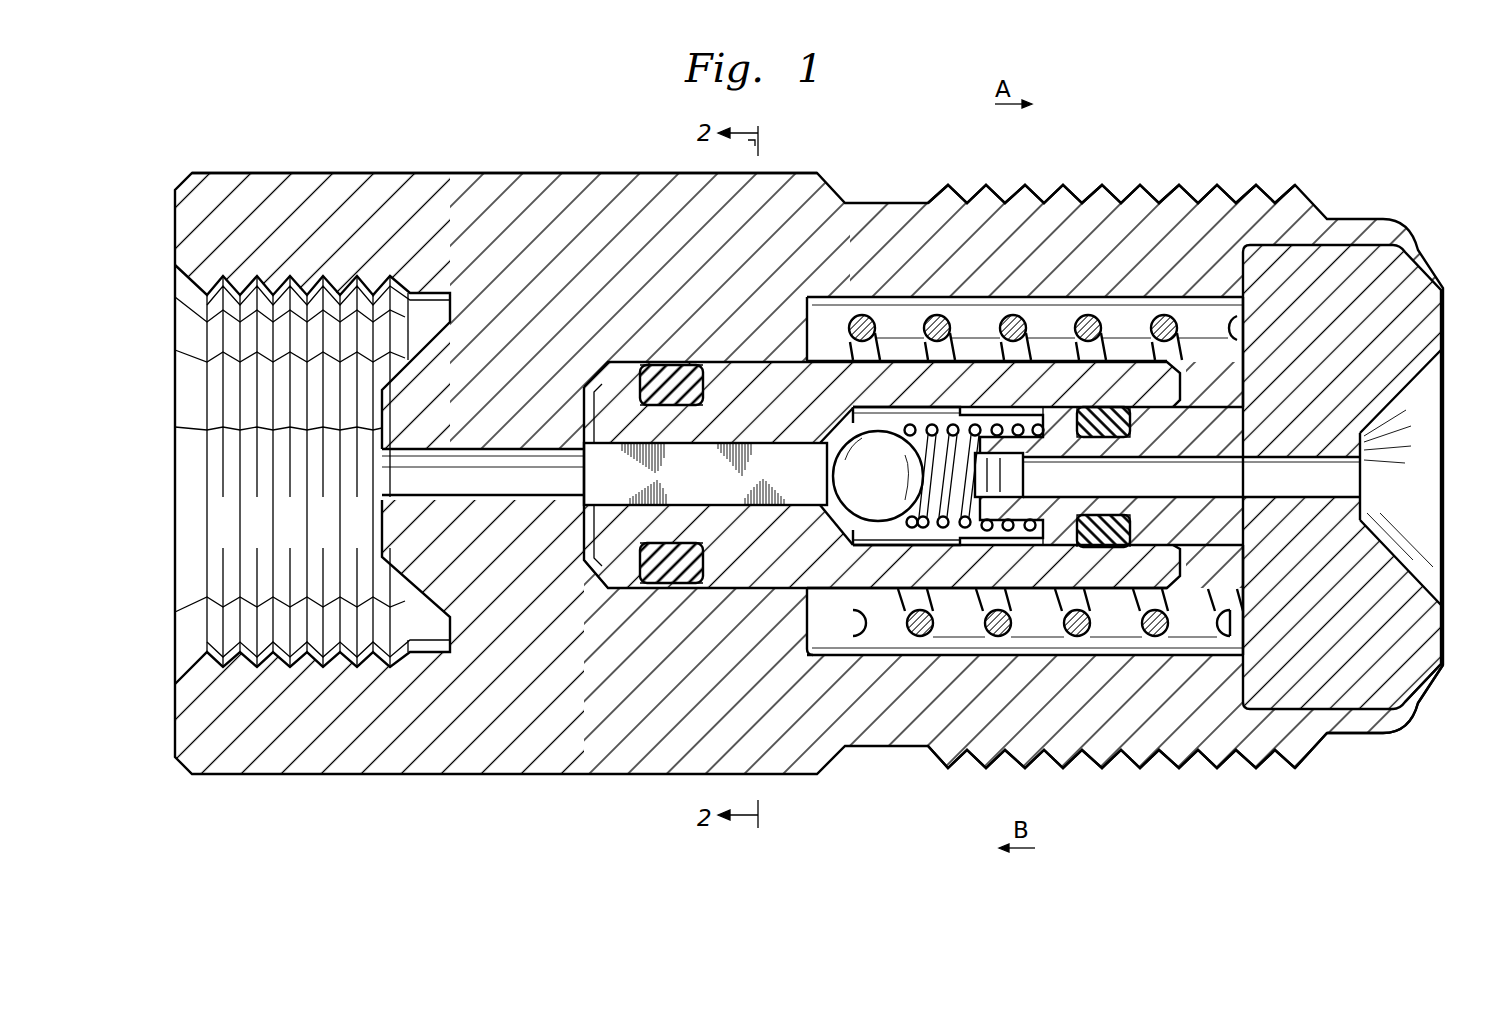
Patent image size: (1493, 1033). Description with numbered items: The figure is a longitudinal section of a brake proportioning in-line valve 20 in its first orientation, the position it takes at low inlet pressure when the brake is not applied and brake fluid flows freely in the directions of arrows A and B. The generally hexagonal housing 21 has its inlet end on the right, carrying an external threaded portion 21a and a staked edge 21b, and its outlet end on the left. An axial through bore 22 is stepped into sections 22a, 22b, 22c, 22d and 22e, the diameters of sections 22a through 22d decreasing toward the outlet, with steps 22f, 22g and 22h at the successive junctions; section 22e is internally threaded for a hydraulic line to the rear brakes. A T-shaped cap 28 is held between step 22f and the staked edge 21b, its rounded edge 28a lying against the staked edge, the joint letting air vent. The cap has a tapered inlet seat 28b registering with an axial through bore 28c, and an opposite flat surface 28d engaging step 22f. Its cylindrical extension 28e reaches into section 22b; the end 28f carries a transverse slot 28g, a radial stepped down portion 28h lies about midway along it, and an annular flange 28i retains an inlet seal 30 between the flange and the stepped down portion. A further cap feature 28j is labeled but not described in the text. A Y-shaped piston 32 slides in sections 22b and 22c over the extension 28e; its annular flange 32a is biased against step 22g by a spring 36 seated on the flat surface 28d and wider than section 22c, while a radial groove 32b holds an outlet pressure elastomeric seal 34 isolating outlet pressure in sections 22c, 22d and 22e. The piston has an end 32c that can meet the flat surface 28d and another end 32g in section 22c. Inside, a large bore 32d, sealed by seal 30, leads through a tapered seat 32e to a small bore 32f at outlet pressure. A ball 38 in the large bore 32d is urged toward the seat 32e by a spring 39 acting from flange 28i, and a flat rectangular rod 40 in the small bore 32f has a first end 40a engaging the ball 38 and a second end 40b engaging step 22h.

The brake proportioning in-line valve 20 is at (1280, 119).
The housing 21 is at (377, 186).
The external threaded portion 21a is at (1262, 202).
The staked edge 21b is at (1419, 724).
The axial through bore 22 is at (176, 405).
The bore section 22a is at (1325, 739).
The bore section 22b is at (968, 650).
The bore section 22c is at (745, 587).
The bore section 22d is at (458, 491).
The internally threaded bore section 22e is at (233, 637).
The step 22f is at (1270, 737).
The step 22g is at (813, 640).
The step 22h is at (598, 574).
The cap 28 is at (1444, 333).
The rounded edge 28a is at (1423, 700).
The inlet seat 28b is at (1394, 555).
The axial through bore 28c is at (1366, 461).
The flat surface 28d is at (1244, 370).
The extension 28e is at (1150, 437).
The end of the extension 28f is at (986, 409).
The transverse slot 28g is at (1013, 480).
The radial stepped down portion 28h is at (1182, 486).
The annular flange 28i is at (1058, 426).
The chamber lower wall 28j is at (1000, 548).
The seal 30 is at (1101, 408).
The piston 32 is at (748, 428).
The annular flange 32a is at (832, 318).
The radial groove 32b is at (662, 376).
The end of the piston 32c is at (1240, 599).
The large bore 32d is at (848, 403).
The tapered bore or seat 32e is at (846, 546).
The small bore 32f is at (706, 501).
The end of the piston 32g is at (592, 410).
The outlet pressure elastomeric seal 34 is at (677, 584).
The spring 36 is at (908, 602).
The ball 38 is at (878, 476).
The spring 39 is at (917, 445).
The rod 40 is at (585, 488).
The first end 40a is at (769, 474).
The second end 40b is at (626, 474).